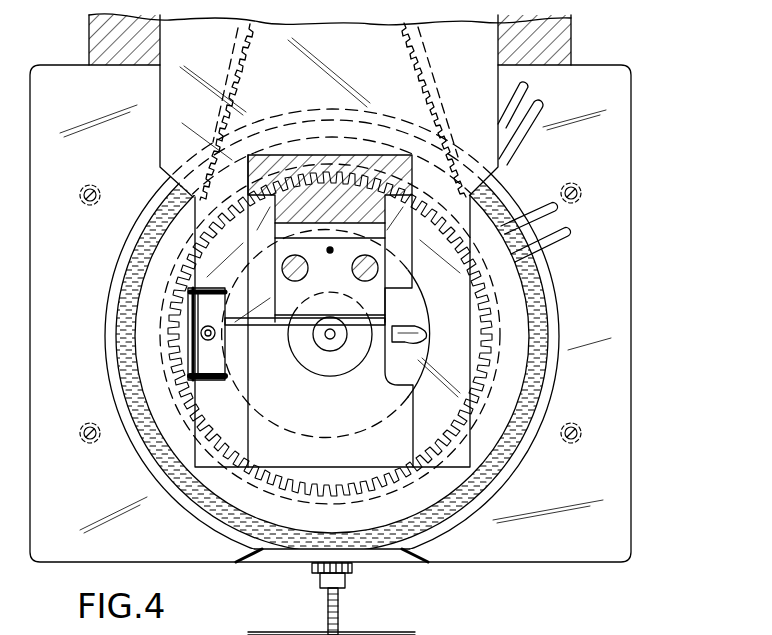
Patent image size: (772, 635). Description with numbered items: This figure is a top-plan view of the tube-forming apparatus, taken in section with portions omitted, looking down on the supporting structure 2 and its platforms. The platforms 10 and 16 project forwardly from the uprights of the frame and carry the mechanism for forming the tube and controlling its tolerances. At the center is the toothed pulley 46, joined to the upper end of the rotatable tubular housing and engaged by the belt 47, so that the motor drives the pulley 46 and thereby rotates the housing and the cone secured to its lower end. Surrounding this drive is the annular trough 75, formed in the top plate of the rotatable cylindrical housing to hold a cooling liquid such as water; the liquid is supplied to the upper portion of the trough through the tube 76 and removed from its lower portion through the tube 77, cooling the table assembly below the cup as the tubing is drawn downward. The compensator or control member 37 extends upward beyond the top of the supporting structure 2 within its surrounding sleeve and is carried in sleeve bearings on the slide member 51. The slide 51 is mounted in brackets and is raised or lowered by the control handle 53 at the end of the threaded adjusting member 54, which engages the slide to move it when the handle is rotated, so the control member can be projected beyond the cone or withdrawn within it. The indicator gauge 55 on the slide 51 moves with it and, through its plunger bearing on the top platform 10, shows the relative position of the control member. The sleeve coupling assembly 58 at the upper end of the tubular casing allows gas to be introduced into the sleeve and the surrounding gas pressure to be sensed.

The supporting structure 2 is at (576, 43).
The platform 10 is at (443, 395).
The platform 16 is at (631, 248).
The compensator or control member 37 is at (318, 633).
The toothed pulley 46 is at (529, 320).
The belt 47 is at (329, 111).
The slide member 51 is at (340, 284).
The control handle 53 is at (323, 368).
The threaded adjusting member 54 is at (340, 617).
The indicator gauge 55 is at (188, 313).
The sleeve coupling assembly 58 is at (290, 358).
The annular trough 75 is at (513, 478).
The tube 76 is at (518, 132).
The tube 77 is at (528, 84).